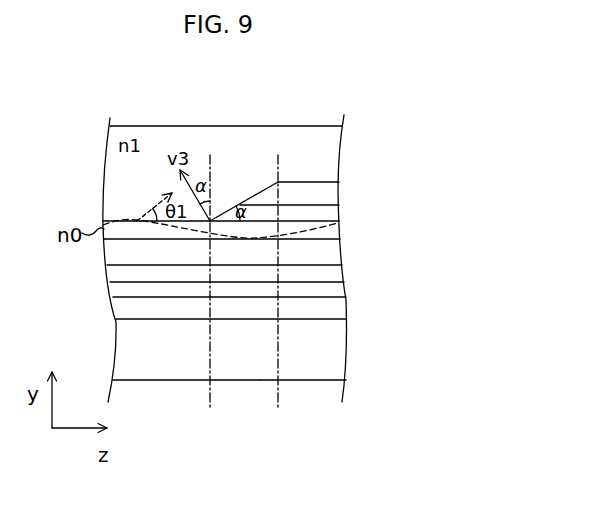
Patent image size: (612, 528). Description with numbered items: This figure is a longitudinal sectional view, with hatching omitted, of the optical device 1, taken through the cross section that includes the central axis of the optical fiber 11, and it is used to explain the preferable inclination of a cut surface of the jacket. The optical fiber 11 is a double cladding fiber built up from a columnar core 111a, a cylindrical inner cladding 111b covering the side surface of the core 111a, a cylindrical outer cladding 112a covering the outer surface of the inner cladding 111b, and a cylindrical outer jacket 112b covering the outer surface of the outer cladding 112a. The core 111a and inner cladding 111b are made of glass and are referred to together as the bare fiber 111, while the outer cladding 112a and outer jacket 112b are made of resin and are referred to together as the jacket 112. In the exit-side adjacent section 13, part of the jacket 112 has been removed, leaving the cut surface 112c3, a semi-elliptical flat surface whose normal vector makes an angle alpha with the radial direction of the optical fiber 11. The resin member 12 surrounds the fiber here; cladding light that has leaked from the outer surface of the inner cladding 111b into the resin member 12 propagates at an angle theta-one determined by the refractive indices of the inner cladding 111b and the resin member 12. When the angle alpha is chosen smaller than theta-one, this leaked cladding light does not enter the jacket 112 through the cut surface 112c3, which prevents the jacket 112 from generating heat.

The optical device 1 is at (388, 118).
The optical fiber 11 is at (152, 320).
The resin member 12 is at (333, 380).
The adjacent section 13 is at (276, 395).
The bare fiber 111 is at (295, 245).
The core 111a is at (340, 252).
The inner cladding 111b is at (340, 232).
The jacket 112 is at (348, 156).
The outer cladding 112a is at (340, 208).
The outer jacket 112b is at (340, 190).
The cut surface 112c3 is at (265, 185).